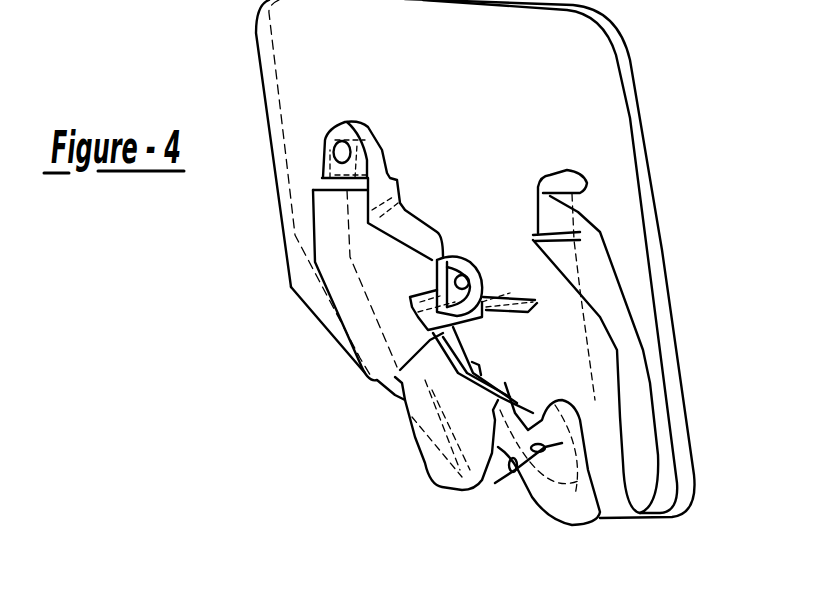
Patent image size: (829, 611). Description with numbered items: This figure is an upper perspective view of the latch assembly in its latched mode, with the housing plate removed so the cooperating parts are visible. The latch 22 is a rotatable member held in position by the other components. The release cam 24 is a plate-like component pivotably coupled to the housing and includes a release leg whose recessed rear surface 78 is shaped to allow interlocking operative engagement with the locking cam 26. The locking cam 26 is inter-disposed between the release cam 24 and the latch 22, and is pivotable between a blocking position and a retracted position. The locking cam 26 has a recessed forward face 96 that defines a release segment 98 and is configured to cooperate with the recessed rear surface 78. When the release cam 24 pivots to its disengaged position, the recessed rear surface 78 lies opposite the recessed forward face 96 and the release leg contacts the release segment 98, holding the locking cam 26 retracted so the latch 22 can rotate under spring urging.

The latch 22 is at (588, 337).
The release cam 24 is at (343, 283).
The locking cam 26 is at (428, 462).
The recessed rear surface 78 is at (447, 257).
The recessed forward face 96 is at (477, 362).
The release segment 98 is at (445, 360).